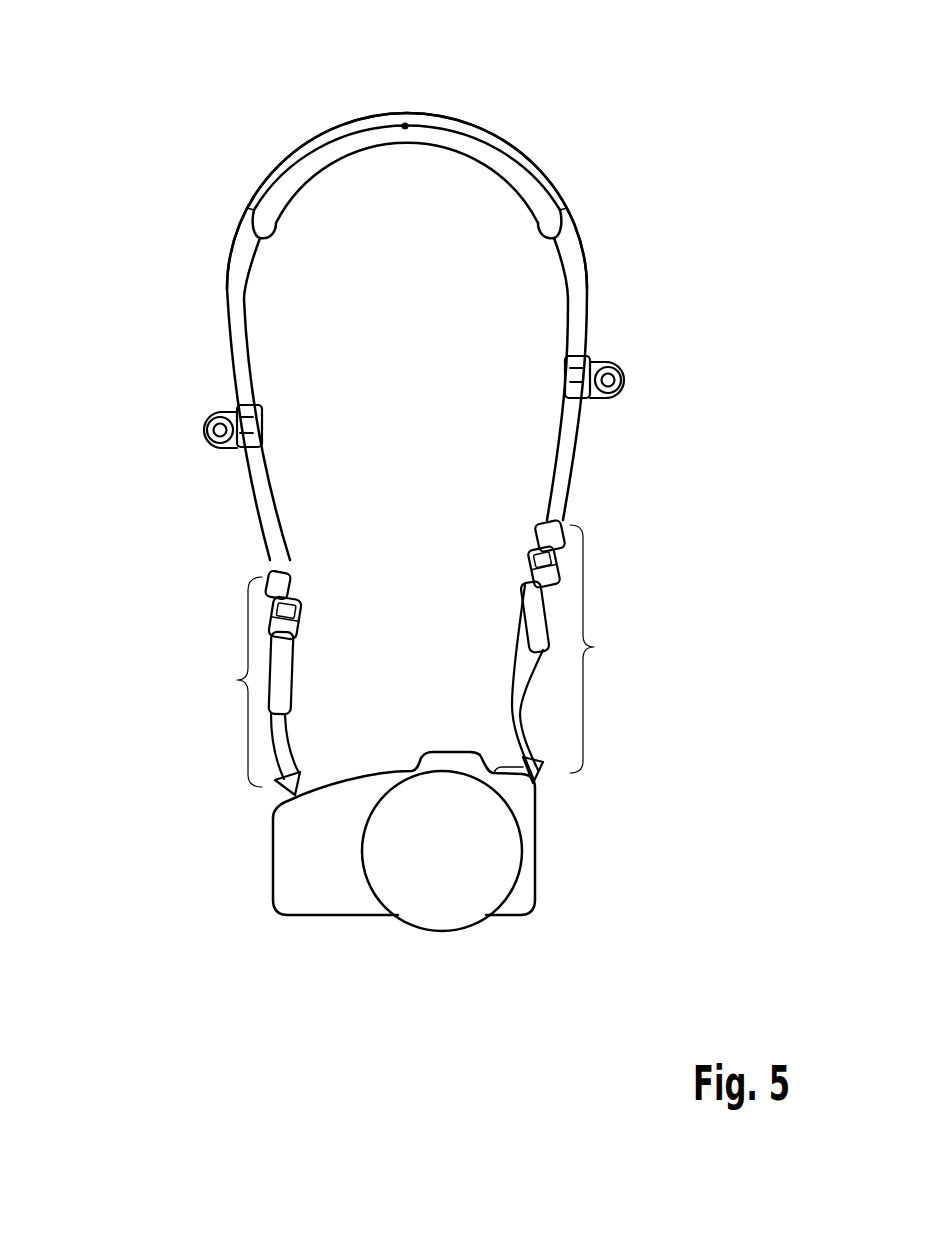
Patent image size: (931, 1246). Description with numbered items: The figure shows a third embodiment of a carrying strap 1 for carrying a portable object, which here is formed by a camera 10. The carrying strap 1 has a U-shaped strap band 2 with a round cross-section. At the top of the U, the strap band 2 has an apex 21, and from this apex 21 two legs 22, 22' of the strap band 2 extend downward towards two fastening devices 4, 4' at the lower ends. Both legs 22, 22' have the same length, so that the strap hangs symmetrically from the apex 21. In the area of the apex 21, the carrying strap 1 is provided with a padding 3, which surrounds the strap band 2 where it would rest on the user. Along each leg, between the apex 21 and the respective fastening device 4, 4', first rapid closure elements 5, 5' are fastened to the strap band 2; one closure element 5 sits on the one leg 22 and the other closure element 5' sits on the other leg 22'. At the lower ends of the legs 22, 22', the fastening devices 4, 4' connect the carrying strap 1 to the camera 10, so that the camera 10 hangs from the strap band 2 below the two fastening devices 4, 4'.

The carrying strap 1 is at (193, 122).
The strap band 2 is at (232, 323).
The padding 3 is at (488, 158).
The apex 21 is at (410, 117).
The leg 22 is at (254, 336).
The leg 22' is at (558, 316).
The first rapid closure element 5 is at (171, 399).
The first rapid closure element 5' is at (660, 345).
The fastening device 4 is at (205, 682).
The fastening device 4' is at (611, 651).
The camera 10 is at (556, 837).